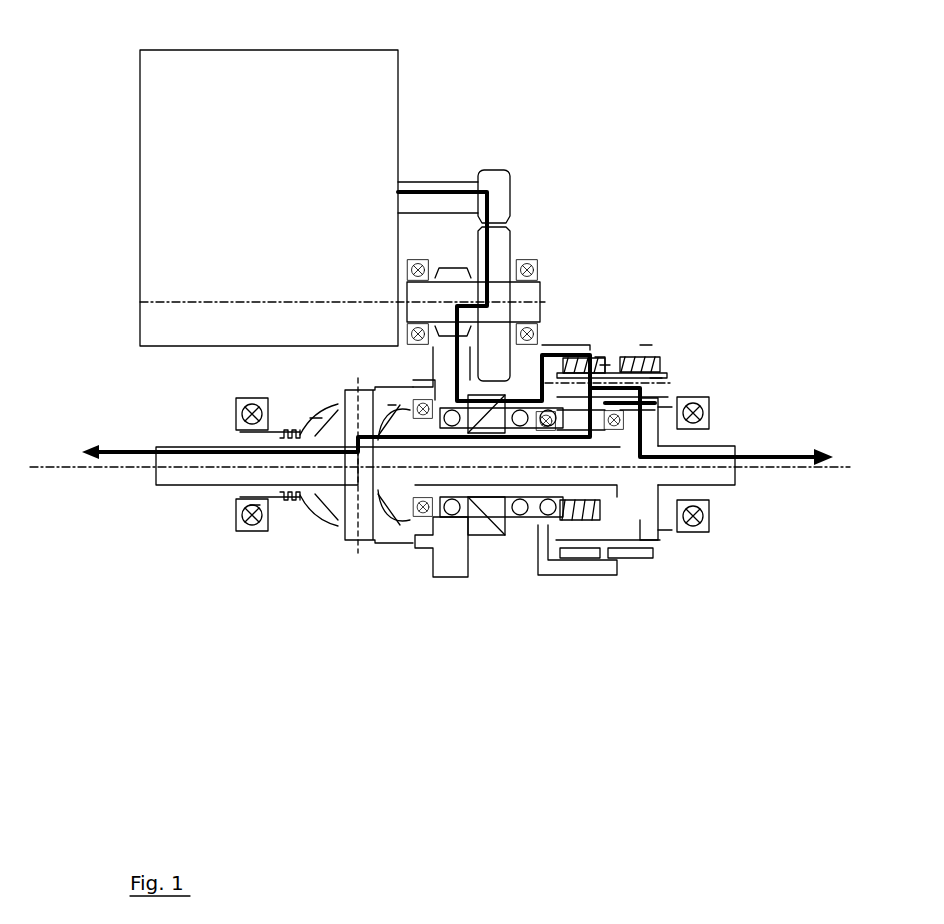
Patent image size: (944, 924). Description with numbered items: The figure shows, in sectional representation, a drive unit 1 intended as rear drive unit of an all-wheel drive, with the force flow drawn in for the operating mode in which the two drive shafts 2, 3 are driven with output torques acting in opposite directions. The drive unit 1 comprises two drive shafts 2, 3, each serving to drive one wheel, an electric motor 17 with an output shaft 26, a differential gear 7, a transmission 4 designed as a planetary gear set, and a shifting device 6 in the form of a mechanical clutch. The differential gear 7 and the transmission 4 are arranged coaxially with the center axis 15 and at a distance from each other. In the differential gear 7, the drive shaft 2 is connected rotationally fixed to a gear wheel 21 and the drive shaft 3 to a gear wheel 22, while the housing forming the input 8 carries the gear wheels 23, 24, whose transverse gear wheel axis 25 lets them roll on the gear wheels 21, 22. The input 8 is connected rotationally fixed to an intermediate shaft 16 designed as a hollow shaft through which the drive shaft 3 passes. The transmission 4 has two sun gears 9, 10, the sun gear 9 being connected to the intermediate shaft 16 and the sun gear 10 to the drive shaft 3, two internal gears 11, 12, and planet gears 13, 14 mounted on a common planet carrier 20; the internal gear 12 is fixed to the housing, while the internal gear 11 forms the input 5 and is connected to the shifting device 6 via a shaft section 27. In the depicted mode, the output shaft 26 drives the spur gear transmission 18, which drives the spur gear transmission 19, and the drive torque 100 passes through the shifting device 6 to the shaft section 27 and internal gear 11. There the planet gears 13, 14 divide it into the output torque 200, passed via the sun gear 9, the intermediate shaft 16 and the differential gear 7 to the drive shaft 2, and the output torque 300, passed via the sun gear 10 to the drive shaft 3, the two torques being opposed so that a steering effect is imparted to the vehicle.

The drive unit 1 is at (660, 80).
The drive shaft 2 is at (168, 472).
The drive shaft 3 is at (727, 477).
The transmission 4 is at (652, 338).
The input 5 is at (532, 372).
The shifting device 6 is at (483, 532).
The differential gear 7 is at (308, 542).
The input 8 is at (421, 452).
The sun gear 9 is at (586, 522).
The sun gear 10 is at (660, 572).
The internal gear 11 is at (596, 357).
The internal gear 12 is at (652, 348).
The planet gears 13 is at (606, 365).
The planet gears 14 is at (656, 378).
The center axis 15 is at (790, 467).
The intermediate shaft 16 is at (440, 456).
The electric motor 17 is at (330, 95).
The spur gear transmission 18 is at (522, 247).
The spur gear transmission 19 is at (446, 570).
The planet carrier 20 is at (660, 395).
The gear wheel 21 is at (260, 505).
The gear wheel 22 is at (395, 413).
The gear wheel 23 is at (340, 521).
The gear wheel 24 is at (320, 420).
The gear wheel axis 25 is at (360, 534).
The output shaft 26 is at (430, 190).
The shaft section 27 is at (525, 520).
The drive torque 100 is at (430, 373).
The output torque 200 is at (118, 448).
The output torque 300 is at (770, 450).